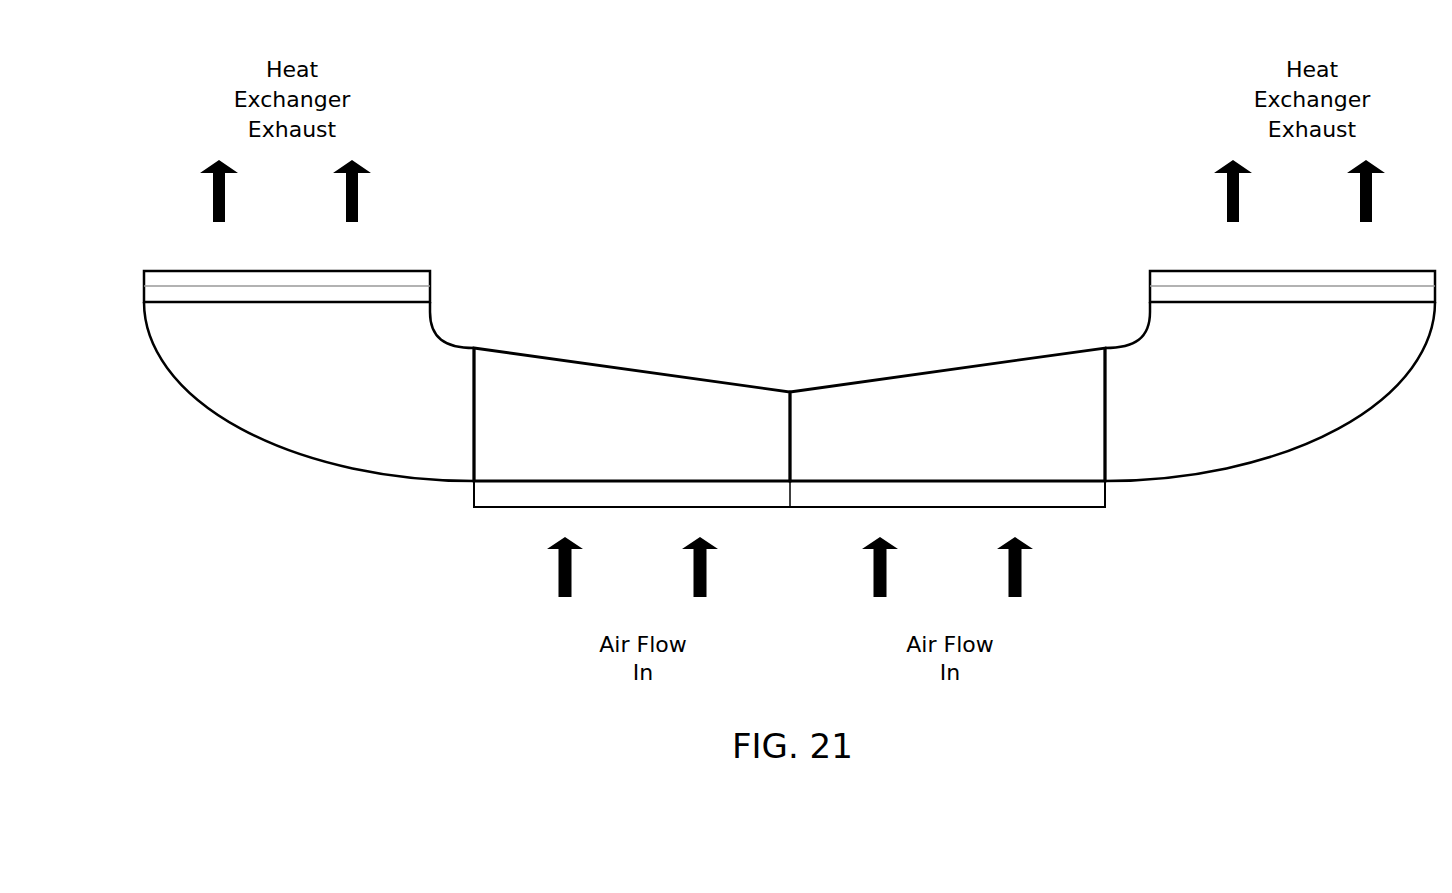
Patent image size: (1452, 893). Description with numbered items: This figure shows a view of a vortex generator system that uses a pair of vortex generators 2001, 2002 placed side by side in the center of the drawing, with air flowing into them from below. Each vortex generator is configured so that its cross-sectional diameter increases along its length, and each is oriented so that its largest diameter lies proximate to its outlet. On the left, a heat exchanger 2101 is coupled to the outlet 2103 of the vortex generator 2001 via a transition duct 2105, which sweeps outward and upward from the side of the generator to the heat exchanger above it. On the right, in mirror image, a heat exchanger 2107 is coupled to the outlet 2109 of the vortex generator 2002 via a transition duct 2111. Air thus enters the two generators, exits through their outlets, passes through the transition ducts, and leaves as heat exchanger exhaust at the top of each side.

The heat exchanger 2101 is at (385, 287).
The transition duct 2105 is at (356, 383).
The heat exchanger 2107 is at (1270, 287).
The transition duct 2111 is at (1256, 400).
The vortex generator 2001 is at (637, 438).
The vortex generator 2002 is at (974, 442).
The outlet 2103 is at (466, 446).
The outlet 2109 is at (1113, 432).